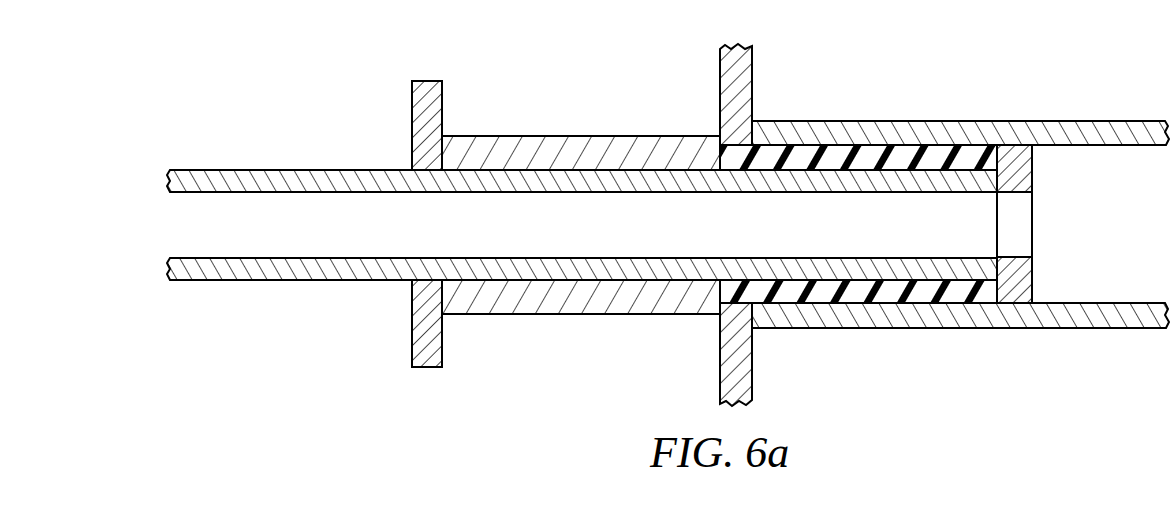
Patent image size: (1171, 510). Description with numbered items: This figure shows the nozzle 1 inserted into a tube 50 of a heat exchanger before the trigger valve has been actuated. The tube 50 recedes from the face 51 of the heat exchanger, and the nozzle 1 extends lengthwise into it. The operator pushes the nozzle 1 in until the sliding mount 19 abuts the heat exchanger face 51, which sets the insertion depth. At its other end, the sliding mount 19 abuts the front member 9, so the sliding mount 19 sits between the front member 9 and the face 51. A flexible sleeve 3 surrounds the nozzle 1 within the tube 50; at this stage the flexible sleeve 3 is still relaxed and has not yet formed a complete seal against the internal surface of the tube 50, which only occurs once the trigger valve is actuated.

The nozzle 1 is at (272, 169).
The flexible sleeve 3 is at (957, 157).
The front member 9 is at (443, 104).
The sliding mount 19 is at (607, 136).
The tube 50 is at (1072, 121).
The face 51 is at (752, 78).